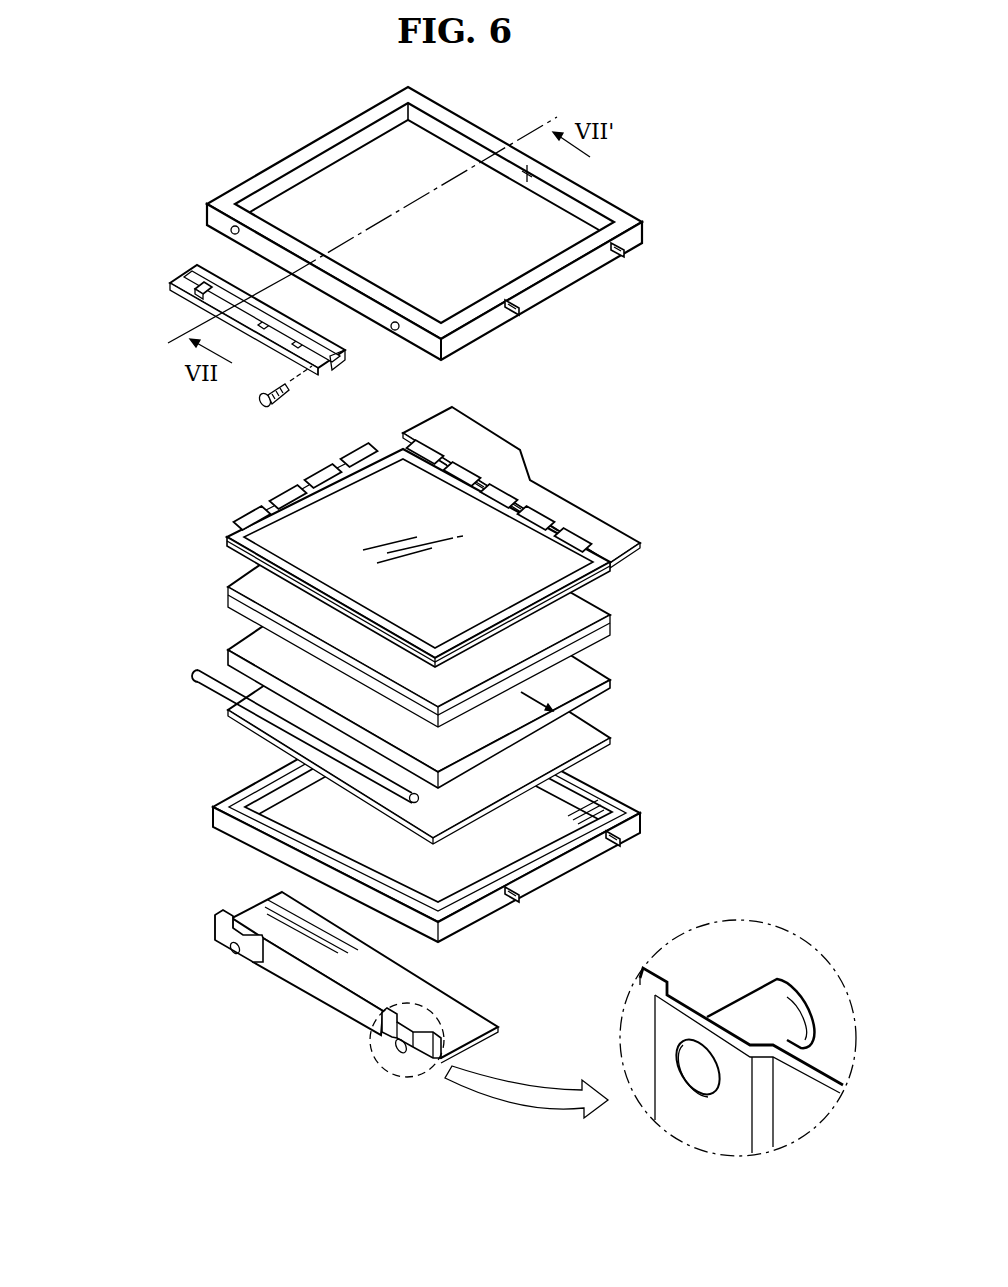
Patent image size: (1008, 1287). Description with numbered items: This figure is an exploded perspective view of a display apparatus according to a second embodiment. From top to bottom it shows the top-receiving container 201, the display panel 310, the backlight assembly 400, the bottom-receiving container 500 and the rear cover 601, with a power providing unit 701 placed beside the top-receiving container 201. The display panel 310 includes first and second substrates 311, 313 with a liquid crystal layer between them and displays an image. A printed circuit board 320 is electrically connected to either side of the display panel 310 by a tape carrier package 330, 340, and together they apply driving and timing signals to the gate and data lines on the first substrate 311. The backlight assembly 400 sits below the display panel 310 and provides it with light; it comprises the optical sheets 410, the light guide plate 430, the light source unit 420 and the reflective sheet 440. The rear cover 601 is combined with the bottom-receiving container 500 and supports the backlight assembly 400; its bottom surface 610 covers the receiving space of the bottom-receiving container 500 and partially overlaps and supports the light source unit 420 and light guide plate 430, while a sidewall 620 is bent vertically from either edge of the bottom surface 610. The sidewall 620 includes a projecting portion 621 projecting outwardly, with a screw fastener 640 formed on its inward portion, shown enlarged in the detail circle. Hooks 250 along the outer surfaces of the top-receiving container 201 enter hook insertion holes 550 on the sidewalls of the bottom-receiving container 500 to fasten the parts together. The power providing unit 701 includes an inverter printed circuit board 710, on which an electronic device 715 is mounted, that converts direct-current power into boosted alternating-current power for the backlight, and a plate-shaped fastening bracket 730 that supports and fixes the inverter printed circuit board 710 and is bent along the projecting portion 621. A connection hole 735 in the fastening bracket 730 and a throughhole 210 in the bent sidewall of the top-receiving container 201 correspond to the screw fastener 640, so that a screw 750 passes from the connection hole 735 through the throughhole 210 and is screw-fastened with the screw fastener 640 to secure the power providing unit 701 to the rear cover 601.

The top-receiving container 201 is at (454, 232).
The throughhole 210 is at (396, 331).
The hooks 250 is at (522, 308).
The display panel 310 is at (356, 533).
The first substrate 311 is at (227, 530).
The second substrate 313 is at (227, 560).
The printed circuit board 320 is at (630, 533).
The tape carrier package 330 is at (360, 447).
The tape carrier package 340 is at (577, 527).
The backlight assembly 400 is at (327, 669).
The optical sheets 410 is at (223, 588).
The light source unit 420 is at (197, 667).
The light guide plate 430 is at (222, 642).
The reflective sheet 440 is at (225, 708).
The bottom-receiving container 500 is at (465, 817).
The hook insertion holes 550 is at (518, 897).
The rear cover 601 is at (515, 1013).
The bottom surface 610 is at (363, 990).
The sidewall 620 is at (324, 990).
The projecting portion 621 is at (424, 1062).
The screw fastener 640 is at (750, 1006).
The power providing unit 701 is at (246, 296).
The inverter printed circuit board 710 is at (187, 267).
The electronic device 715 is at (197, 283).
The fastening bracket 730 is at (193, 258).
The connection hole 735 is at (340, 370).
The screw 750 is at (257, 400).